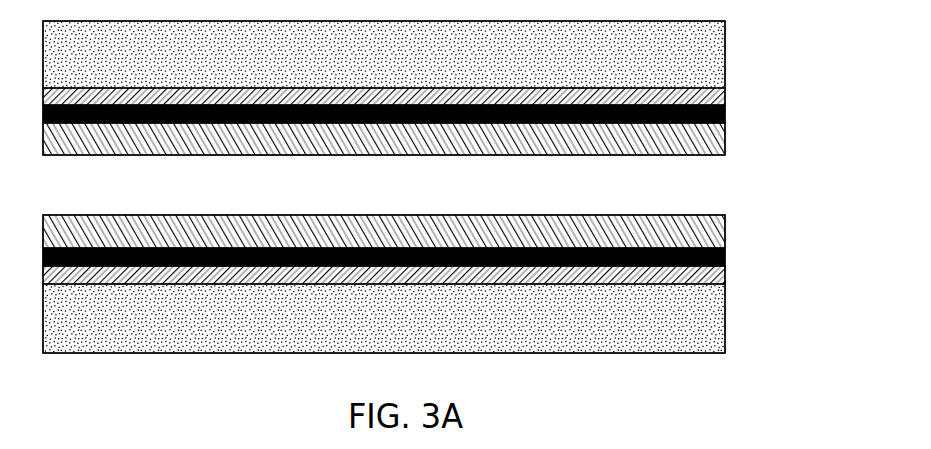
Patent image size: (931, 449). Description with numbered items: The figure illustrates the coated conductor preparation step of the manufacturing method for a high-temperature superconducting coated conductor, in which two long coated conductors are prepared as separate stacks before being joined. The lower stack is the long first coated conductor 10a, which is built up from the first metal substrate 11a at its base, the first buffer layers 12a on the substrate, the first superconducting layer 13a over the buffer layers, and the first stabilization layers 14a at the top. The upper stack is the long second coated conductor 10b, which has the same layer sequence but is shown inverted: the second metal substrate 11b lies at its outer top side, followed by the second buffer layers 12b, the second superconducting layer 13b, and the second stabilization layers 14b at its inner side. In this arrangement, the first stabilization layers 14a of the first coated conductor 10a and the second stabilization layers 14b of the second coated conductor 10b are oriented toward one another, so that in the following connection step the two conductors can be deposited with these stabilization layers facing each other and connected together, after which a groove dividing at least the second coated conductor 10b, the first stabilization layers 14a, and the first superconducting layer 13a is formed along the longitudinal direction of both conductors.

The first coated conductor 10a is at (792, 213).
The second coated conductor 10b is at (790, 25).
The first metal substrate 11a is at (715, 311).
The second metal substrate 11b is at (717, 54).
The first buffer layers 12a is at (720, 277).
The second buffer layers 12b is at (725, 97).
The first superconducting layer 13a is at (725, 252).
The second superconducting layer 13b is at (725, 118).
The first stabilization layers 14a is at (725, 227).
The second stabilization layers 14b is at (725, 128).